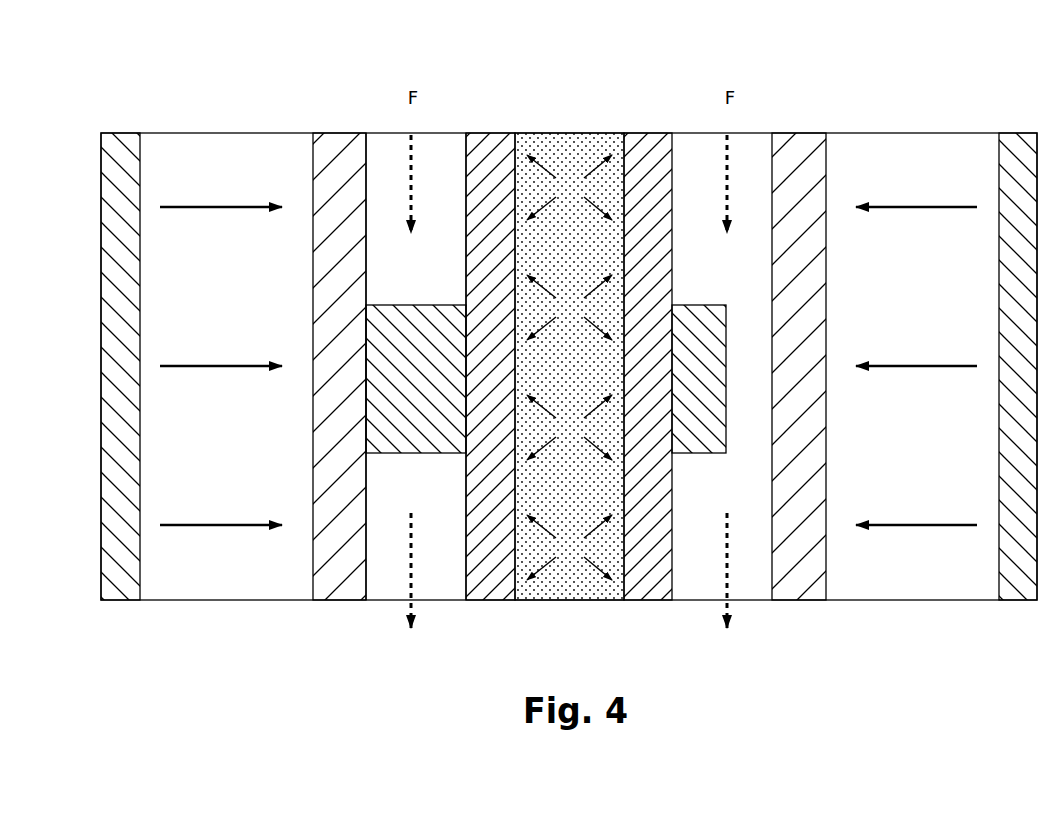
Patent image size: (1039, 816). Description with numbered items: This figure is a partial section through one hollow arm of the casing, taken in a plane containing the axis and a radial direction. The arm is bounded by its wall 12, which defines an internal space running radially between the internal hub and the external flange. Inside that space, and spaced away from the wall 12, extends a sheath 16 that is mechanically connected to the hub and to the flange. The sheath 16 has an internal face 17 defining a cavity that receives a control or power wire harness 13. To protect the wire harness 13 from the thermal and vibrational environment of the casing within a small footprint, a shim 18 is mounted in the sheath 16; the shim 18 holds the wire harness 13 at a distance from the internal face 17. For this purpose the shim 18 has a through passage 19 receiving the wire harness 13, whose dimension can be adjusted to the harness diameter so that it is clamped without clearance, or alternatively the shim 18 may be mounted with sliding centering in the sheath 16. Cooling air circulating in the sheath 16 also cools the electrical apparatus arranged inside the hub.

The wall 12 is at (1016, 124).
The wire harness 13 is at (653, 124).
The sheath 16 is at (340, 124).
The internal face 17 is at (374, 163).
The shim 18 is at (440, 440).
The through passage 19 is at (681, 468).